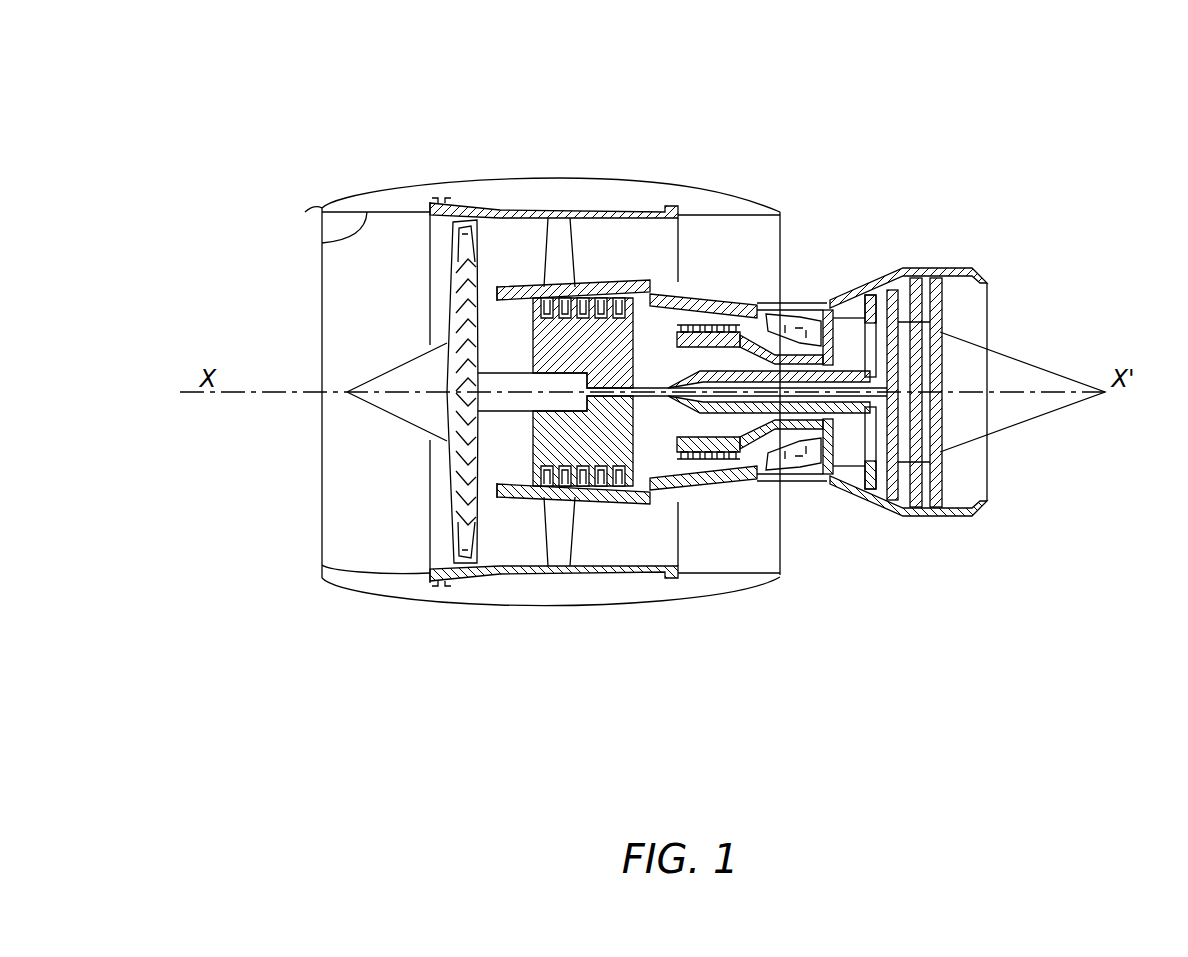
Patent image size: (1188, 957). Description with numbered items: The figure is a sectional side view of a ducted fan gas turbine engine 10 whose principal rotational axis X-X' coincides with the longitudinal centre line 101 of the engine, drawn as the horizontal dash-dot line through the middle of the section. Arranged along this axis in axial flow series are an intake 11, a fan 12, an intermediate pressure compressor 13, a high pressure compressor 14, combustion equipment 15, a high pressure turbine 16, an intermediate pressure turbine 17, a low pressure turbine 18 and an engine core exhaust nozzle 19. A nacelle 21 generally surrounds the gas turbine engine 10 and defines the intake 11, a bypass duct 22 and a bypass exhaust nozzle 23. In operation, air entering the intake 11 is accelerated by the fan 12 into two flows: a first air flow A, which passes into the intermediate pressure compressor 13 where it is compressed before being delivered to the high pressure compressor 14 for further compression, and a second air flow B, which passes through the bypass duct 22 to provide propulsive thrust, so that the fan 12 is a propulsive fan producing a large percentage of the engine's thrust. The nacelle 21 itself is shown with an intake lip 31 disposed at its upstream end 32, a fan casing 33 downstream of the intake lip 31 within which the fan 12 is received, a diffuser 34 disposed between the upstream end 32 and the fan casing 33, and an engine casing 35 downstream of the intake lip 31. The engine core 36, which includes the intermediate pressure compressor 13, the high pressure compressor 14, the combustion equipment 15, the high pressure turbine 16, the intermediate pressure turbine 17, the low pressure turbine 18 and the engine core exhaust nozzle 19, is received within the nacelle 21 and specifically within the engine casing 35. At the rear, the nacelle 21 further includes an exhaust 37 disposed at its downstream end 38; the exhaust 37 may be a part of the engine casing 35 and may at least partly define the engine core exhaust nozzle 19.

The ducted fan gas turbine engine 10 is at (268, 74).
The intake 11 is at (322, 244).
The fan 12 is at (448, 508).
The intermediate pressure compressor 13 is at (583, 490).
The high pressure compressor 14 is at (716, 325).
The combustion equipment 15 is at (771, 463).
The high pressure turbine 16 is at (830, 480).
The intermediate pressure turbine 17 is at (865, 294).
The low pressure turbine 18 is at (889, 510).
The engine core exhaust nozzle 19 is at (965, 268).
The nacelle 21 is at (547, 192).
The bypass duct 22 is at (736, 260).
The bypass exhaust nozzle 23 is at (780, 211).
The intake lip 31 is at (305, 212).
The upstream end 32 is at (306, 196).
The fan casing 33 is at (466, 200).
The diffuser 34 is at (360, 309).
The engine casing 35 is at (622, 282).
The engine core 36 is at (492, 285).
The exhaust 37 is at (988, 298).
The downstream end 38 is at (1010, 263).
The longitudinal centre line 101 is at (268, 390).